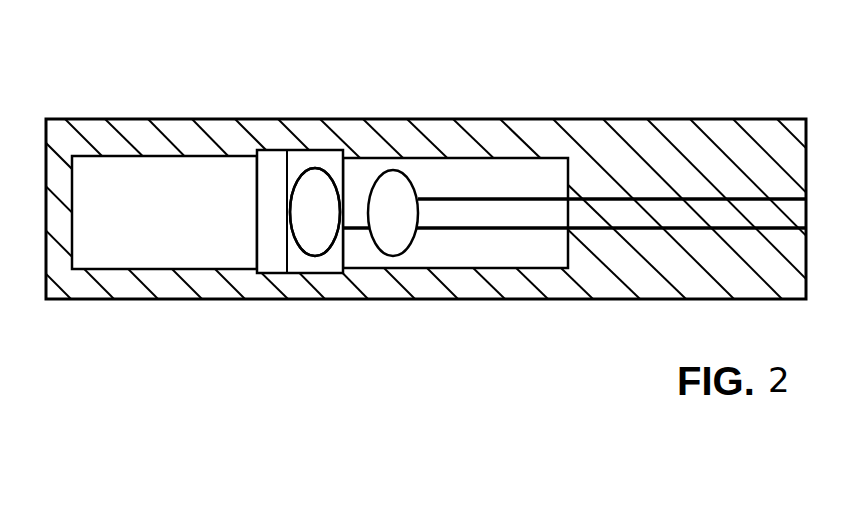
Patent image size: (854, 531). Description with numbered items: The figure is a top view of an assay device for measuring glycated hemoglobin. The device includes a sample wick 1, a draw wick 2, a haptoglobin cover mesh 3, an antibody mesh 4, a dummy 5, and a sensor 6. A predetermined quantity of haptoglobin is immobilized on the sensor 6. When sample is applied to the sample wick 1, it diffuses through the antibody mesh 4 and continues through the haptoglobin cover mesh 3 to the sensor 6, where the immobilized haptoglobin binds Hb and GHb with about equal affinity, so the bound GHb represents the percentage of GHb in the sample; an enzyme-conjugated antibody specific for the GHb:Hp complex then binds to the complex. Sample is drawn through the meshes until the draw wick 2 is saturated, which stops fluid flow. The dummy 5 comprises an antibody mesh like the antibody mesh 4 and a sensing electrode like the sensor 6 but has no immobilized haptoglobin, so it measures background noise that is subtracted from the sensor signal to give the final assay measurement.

The sample wick 1 is at (98, 167).
The draw wick 2 is at (533, 257).
The haptoglobin cover mesh 3 is at (325, 158).
The antibody mesh 4 is at (273, 160).
The dummy 5 is at (393, 247).
The sensor 6 is at (303, 242).